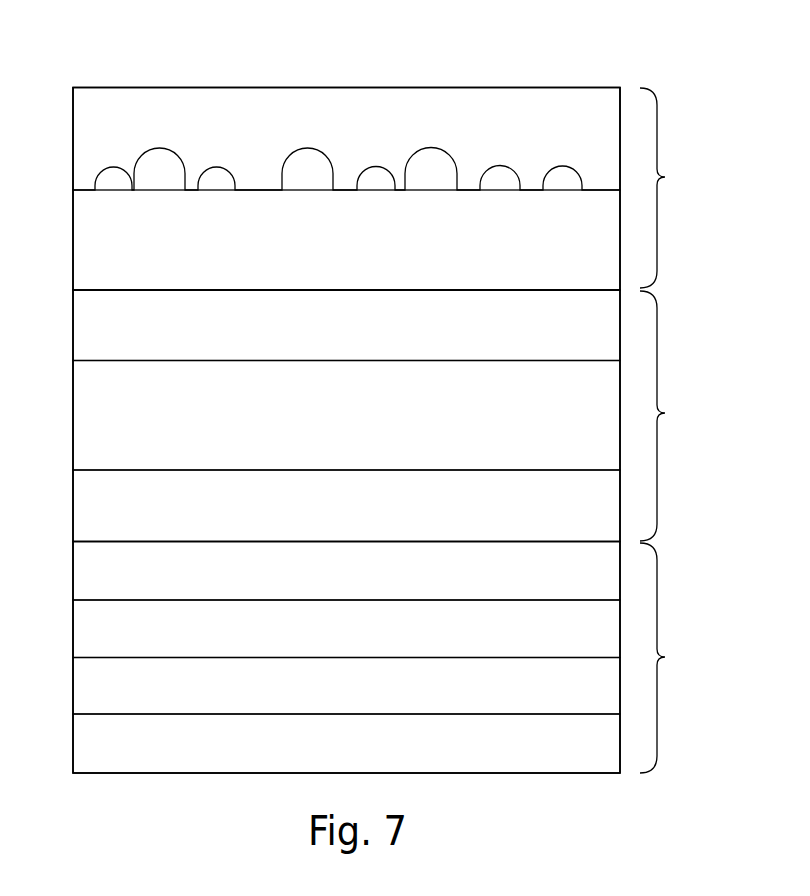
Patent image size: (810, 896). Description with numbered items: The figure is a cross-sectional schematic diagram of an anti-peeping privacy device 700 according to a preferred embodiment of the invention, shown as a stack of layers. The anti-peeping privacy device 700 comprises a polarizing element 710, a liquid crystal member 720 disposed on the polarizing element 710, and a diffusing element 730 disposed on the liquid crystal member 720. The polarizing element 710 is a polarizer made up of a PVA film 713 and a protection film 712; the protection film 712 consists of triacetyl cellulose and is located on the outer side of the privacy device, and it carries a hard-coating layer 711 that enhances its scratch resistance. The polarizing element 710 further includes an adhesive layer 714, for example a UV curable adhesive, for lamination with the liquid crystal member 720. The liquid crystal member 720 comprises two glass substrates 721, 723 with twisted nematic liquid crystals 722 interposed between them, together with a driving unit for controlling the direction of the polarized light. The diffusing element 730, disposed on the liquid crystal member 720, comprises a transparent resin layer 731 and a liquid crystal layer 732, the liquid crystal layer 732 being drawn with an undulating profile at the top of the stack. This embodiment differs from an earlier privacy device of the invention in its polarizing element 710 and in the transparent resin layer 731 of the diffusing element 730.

The anti-peeping privacy device 700 is at (82, 32).
The polarizing element 710 is at (395, 658).
The hard-coating layer 711 is at (346, 743).
The protection film 712 is at (346, 686).
The PVA film 713 is at (346, 629).
The adhesive layer 714 is at (346, 571).
The liquid crystal member 720 is at (395, 416).
The glass substrate 721 is at (346, 506).
The twisted nematic liquid crystals 722 is at (346, 416).
The glass substrate 723 is at (346, 325).
The diffusing element 730 is at (395, 189).
The transparent resin layer 731 is at (346, 240).
The liquid crystal layer 732 is at (346, 139).